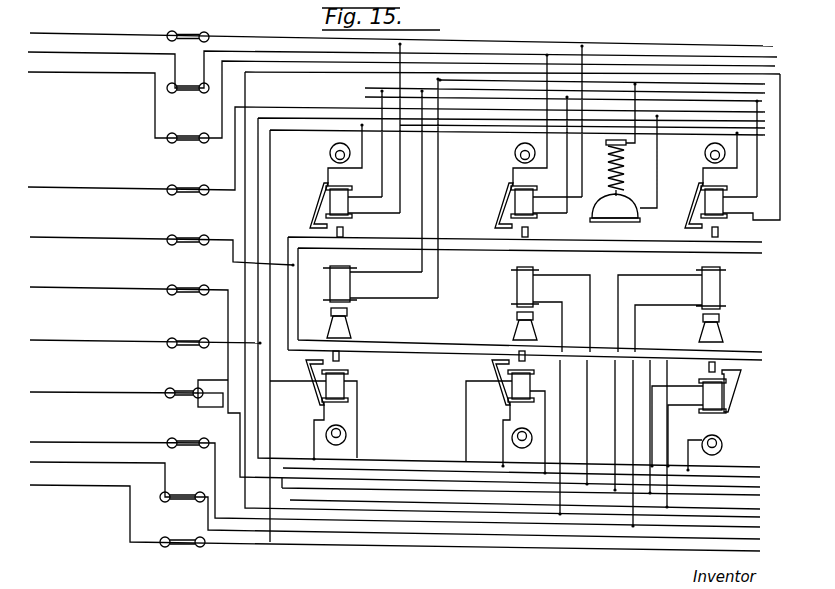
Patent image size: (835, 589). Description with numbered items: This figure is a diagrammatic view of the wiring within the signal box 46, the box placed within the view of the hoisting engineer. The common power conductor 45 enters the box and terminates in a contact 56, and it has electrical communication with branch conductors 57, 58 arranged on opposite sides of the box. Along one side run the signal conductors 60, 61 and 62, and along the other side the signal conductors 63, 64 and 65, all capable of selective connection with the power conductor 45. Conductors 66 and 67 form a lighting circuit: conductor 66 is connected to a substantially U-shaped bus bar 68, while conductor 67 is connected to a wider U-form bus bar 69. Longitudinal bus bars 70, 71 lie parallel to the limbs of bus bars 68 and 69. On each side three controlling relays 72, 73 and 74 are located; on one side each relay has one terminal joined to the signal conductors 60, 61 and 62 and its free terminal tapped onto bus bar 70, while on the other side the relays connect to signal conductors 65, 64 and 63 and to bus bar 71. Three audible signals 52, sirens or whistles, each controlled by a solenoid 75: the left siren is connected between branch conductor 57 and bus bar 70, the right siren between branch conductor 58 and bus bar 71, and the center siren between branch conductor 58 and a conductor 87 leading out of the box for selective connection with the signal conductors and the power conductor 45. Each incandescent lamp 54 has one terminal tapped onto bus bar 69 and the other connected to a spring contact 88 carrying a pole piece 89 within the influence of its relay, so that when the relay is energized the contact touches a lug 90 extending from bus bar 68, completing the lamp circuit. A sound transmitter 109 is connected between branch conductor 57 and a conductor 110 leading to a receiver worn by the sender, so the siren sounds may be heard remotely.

The common power conductor 45 is at (98, 392).
The signal box 46 is at (51, 136).
The audible signal 52 is at (332, 324).
The incandescent lamp 54 is at (329, 153).
The contact 56 is at (168, 390).
The branch conductor 57 is at (281, 78).
The branch conductor 58 is at (322, 512).
The signal conductor 60 is at (50, 33).
The signal conductor 61 is at (110, 52).
The signal conductor 62 is at (66, 73).
The signal conductor 63 is at (50, 442).
The signal conductor 64 is at (120, 462).
The signal conductor 65 is at (78, 486).
The lighting circuit conductor 66 is at (101, 238).
The lighting circuit conductor 67 is at (64, 340).
The bus bar 68 is at (427, 345).
The bus bar 69 is at (404, 458).
The bus bar 70 is at (481, 93).
The bus bar 71 is at (418, 497).
The controlling relay 72 is at (316, 212).
The controlling relay 73 is at (500, 208).
The controlling relay 74 is at (724, 202).
The solenoid 75 is at (352, 285).
The conductor 87 is at (101, 288).
The spring contact 88 is at (327, 196).
The pole piece 89 is at (344, 232).
The lug 90 is at (344, 233).
The sound transmitter 109 is at (626, 210).
The conductor 110 is at (114, 187).